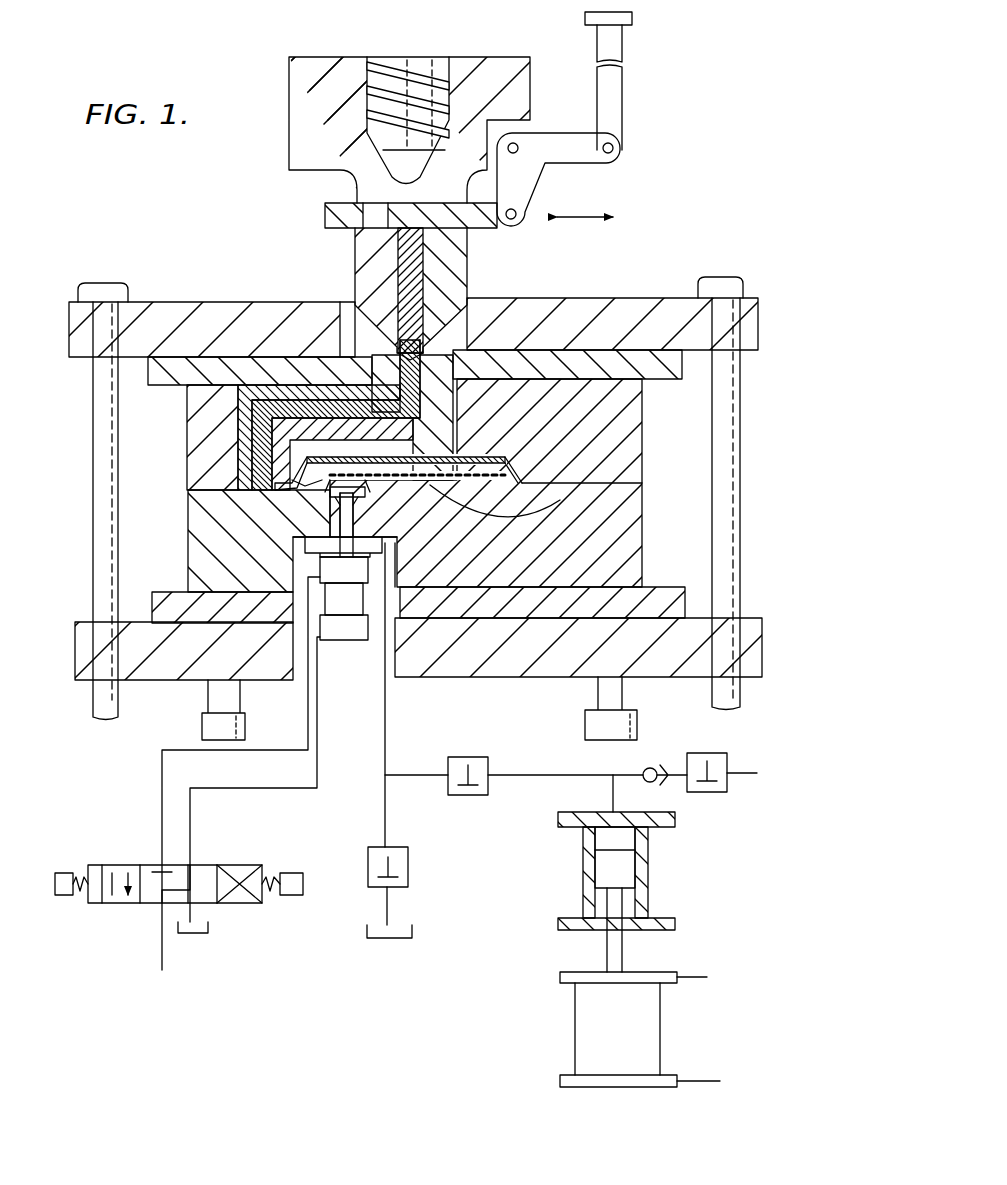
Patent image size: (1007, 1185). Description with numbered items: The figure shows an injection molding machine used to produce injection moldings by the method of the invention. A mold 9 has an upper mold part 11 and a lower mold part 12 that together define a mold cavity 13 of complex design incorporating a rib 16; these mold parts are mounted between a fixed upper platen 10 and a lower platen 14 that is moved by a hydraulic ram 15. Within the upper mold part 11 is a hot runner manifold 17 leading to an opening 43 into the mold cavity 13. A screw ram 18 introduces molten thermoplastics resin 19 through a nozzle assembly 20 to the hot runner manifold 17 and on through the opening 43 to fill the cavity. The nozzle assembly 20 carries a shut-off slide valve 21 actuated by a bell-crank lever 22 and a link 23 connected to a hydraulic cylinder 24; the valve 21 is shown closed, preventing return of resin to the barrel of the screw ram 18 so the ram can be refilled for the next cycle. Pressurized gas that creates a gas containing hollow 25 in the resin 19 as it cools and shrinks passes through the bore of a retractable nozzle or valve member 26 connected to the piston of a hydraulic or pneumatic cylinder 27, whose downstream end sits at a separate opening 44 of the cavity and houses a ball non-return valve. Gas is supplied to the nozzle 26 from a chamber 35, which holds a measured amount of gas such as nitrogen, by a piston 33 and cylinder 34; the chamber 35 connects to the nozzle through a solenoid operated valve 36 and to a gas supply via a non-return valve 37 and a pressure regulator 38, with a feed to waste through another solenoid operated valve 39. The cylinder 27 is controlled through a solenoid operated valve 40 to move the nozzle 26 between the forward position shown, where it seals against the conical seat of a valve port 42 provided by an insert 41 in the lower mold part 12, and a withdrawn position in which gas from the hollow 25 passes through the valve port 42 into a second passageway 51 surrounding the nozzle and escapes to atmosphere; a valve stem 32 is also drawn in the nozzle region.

The mold 9 is at (158, 473).
The fixed upper platen 10 is at (618, 298).
The upper mold part 11 is at (200, 437).
The lower mold part 12 is at (205, 561).
The mold cavity 13 is at (535, 466).
The lower platen 14 is at (515, 670).
The hydraulic ram 15 is at (202, 718).
The rib 16 is at (512, 486).
The hot runner manifold 17 is at (248, 400).
The screw ram 18 is at (300, 86).
The molten thermoplastics resin 19 is at (300, 407).
The nozzle assembly 20 is at (365, 251).
The shut-off slide valve 21 is at (330, 212).
The bell-crank lever 22 is at (578, 153).
The link 23 is at (622, 100).
The hydraulic cylinder 24 is at (632, 18).
The gas containing hollow 25 is at (455, 503).
The retractable nozzle or valve member 26 is at (397, 540).
The hydraulic or pneumatic cylinder 27 is at (354, 642).
The valve stem 32 is at (343, 513).
The piston 33 is at (620, 883).
The cylinder 34 is at (648, 1027).
The chamber 35 is at (630, 837).
The solenoid operated valve 36 is at (448, 770).
The non-return valve 37 is at (662, 768).
The pressure regulator 38 is at (712, 752).
The solenoid operated valve 39 is at (372, 852).
The solenoid operated valve 40 is at (140, 865).
The insert 41 is at (343, 500).
The valve port 42 is at (368, 494).
The opening 43 is at (275, 492).
The opening 44 is at (352, 462).
The second passageway 51 is at (300, 530).